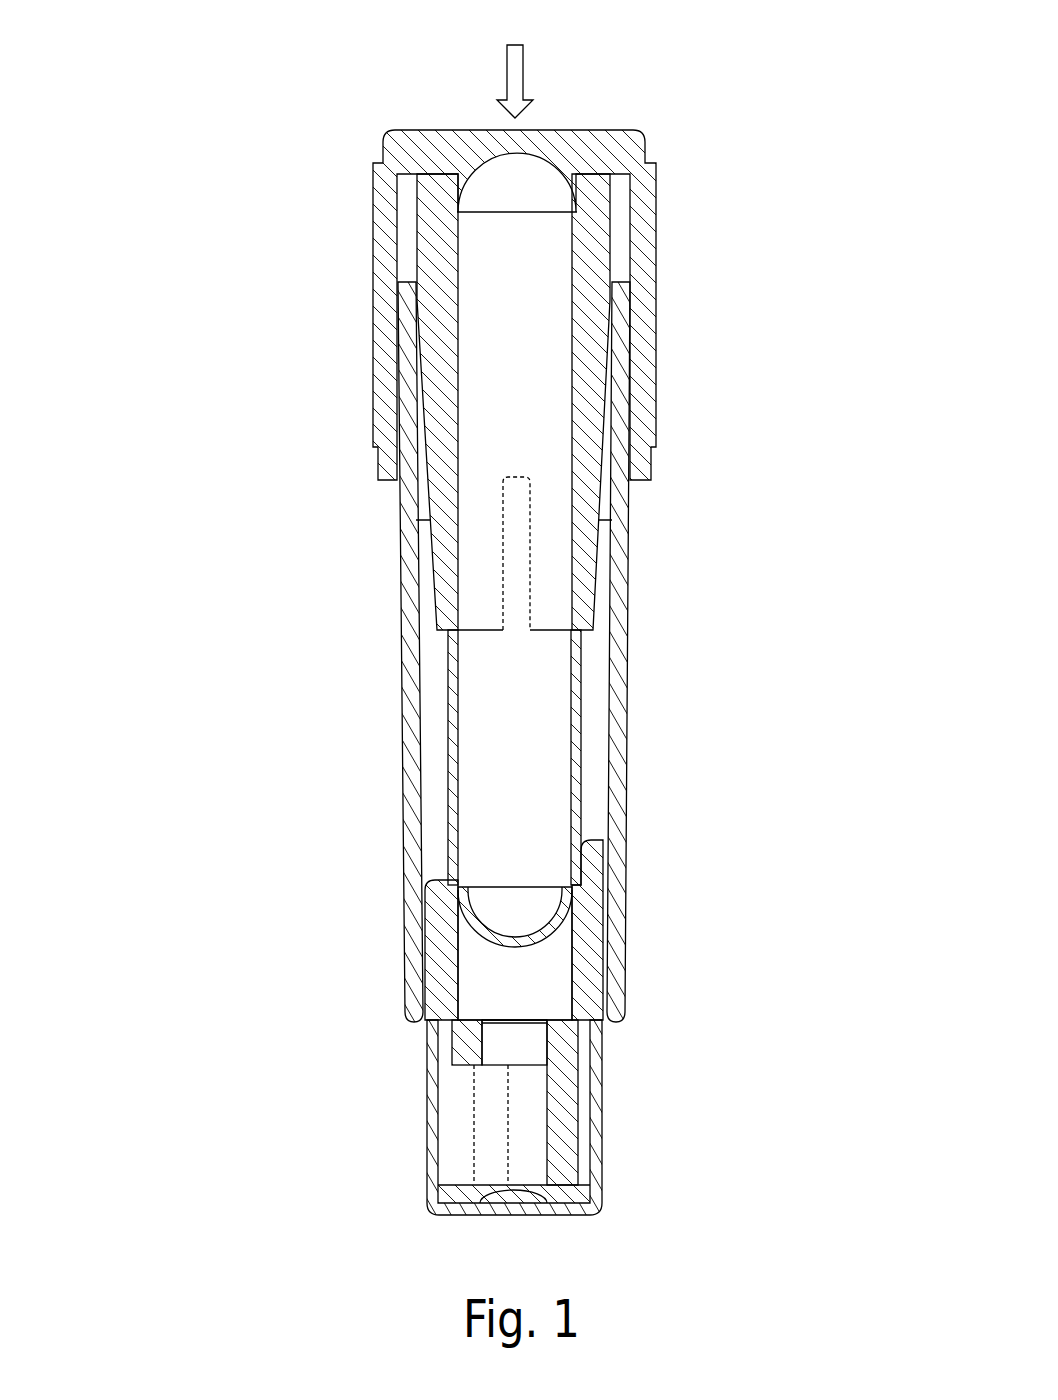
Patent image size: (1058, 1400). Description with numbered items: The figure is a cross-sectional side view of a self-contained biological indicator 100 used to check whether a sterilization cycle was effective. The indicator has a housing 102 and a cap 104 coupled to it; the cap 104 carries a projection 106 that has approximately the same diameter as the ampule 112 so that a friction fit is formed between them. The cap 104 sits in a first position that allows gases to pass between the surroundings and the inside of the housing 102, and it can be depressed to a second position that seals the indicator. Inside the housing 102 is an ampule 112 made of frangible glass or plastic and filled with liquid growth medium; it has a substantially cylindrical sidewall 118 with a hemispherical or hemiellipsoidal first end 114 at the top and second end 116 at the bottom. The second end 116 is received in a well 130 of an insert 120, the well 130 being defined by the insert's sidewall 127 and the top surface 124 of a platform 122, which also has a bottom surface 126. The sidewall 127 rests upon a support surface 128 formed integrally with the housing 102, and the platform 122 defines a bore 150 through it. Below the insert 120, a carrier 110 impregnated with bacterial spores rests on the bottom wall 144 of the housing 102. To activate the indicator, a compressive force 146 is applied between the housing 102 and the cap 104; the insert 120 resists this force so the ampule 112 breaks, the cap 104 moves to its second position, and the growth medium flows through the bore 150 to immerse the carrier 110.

The self-contained biological indicator 100 is at (216, 127).
The housing 102 is at (628, 537).
The cap 104 is at (633, 138).
The projection 106 is at (610, 248).
The carrier 110 is at (580, 1188).
The ampule 112 is at (520, 297).
The first end 114 is at (497, 185).
The second end 116 is at (498, 905).
The sidewall 118 is at (578, 687).
The insert 120 is at (557, 958).
The platform 122 is at (463, 1040).
The top surface 124 is at (507, 1022).
The bottom surface 126 is at (463, 1063).
The sidewall 127 is at (568, 945).
The support surface 128 is at (433, 1008).
The well 130 is at (550, 976).
The bottom wall 144 is at (460, 1207).
The compressive force 146 is at (520, 62).
The bore 150 is at (535, 1038).